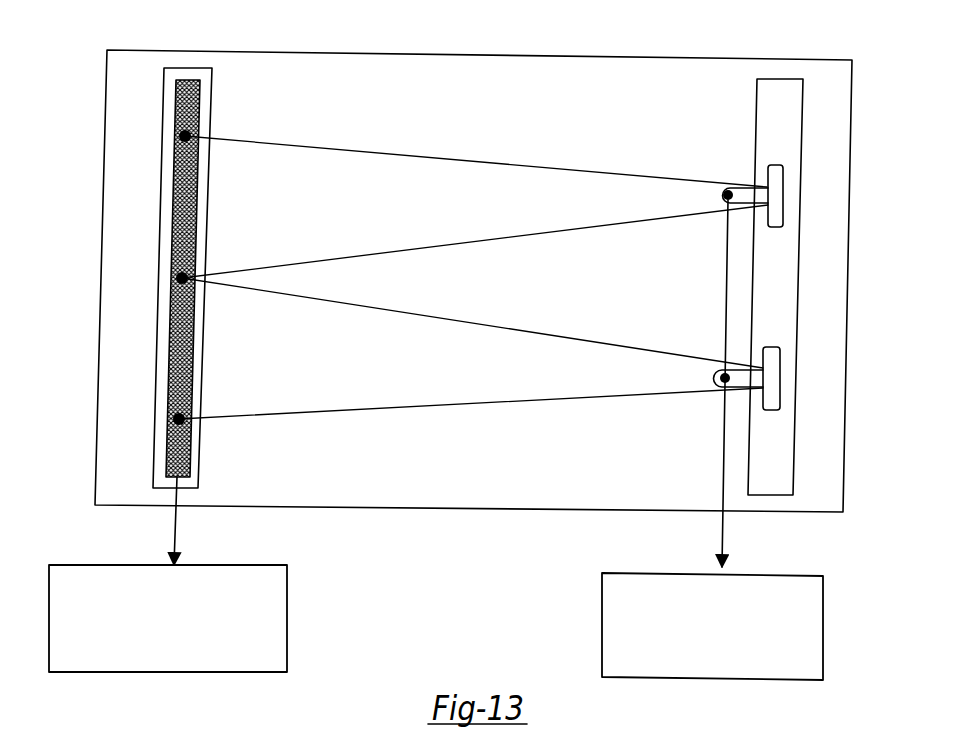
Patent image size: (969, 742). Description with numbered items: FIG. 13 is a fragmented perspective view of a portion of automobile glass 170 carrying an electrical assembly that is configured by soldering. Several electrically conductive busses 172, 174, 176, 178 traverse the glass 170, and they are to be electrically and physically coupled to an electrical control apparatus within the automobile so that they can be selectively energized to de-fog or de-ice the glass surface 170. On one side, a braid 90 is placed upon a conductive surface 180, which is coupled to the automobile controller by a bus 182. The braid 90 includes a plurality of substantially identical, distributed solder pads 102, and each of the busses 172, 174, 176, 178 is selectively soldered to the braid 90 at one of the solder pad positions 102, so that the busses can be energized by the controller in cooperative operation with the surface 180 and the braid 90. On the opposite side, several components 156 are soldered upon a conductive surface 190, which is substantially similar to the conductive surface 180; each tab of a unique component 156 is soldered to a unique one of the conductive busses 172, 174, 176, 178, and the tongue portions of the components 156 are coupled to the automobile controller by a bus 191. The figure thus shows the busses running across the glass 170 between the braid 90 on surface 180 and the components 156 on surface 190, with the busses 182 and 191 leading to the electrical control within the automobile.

The braid 90 is at (186, 78).
The solder pads 102 is at (185, 136).
The components 156 is at (785, 195).
The automobile glass 170 is at (580, 478).
The electrically conductive bus 172 is at (534, 163).
The electrically conductive bus 174 is at (421, 246).
The electrically conductive bus 176 is at (519, 332).
The electrically conductive bus 178 is at (440, 407).
The conductive surface 180 is at (196, 455).
The bus 182 is at (176, 527).
The conductive surface 190 is at (775, 93).
The bus 191 is at (723, 530).